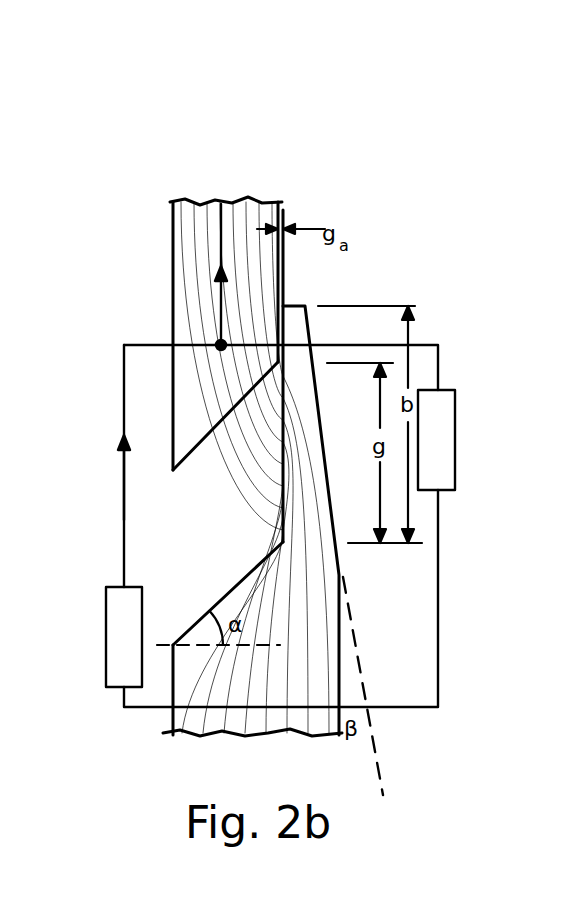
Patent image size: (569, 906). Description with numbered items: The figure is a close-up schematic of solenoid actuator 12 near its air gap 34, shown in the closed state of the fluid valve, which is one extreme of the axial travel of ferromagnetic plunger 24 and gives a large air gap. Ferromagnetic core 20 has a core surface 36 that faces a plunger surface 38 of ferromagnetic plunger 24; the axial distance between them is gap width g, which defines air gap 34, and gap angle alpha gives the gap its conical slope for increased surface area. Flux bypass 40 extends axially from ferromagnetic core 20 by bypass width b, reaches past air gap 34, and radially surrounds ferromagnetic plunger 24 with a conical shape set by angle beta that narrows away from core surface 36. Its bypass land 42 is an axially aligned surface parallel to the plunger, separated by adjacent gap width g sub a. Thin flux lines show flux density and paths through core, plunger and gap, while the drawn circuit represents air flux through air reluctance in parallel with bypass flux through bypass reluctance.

The solenoid actuator 12 is at (426, 134).
The ferromagnetic core 20 is at (223, 722).
The ferromagnetic plunger 24 is at (185, 292).
The air gap 34 is at (197, 503).
The core surface 36 is at (232, 582).
The plunger surface 38 is at (197, 446).
The flux bypass 40 is at (297, 420).
The bypass land 42 is at (283, 513).